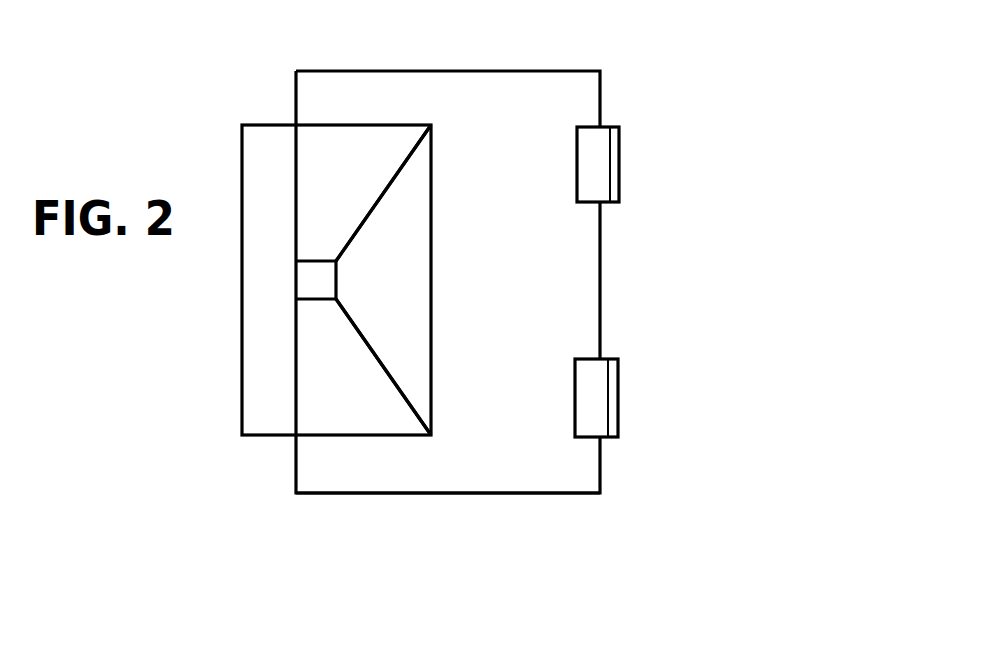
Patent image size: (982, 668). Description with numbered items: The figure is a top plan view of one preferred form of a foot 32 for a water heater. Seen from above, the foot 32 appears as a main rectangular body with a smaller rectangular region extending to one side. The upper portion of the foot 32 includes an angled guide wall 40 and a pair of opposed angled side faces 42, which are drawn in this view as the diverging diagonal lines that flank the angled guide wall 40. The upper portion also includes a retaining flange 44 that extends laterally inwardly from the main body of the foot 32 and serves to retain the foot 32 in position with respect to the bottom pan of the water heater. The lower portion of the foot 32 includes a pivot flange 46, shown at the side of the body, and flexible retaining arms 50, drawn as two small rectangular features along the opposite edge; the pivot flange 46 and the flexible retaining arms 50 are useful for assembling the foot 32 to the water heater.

The foot 32 is at (653, 78).
The angled guide wall 40 is at (407, 287).
The pair of opposed angled side faces 42 is at (356, 192).
The retaining flange 44 is at (513, 494).
The pivot flange 46 is at (284, 293).
The flexible retaining arms 50 is at (620, 166).